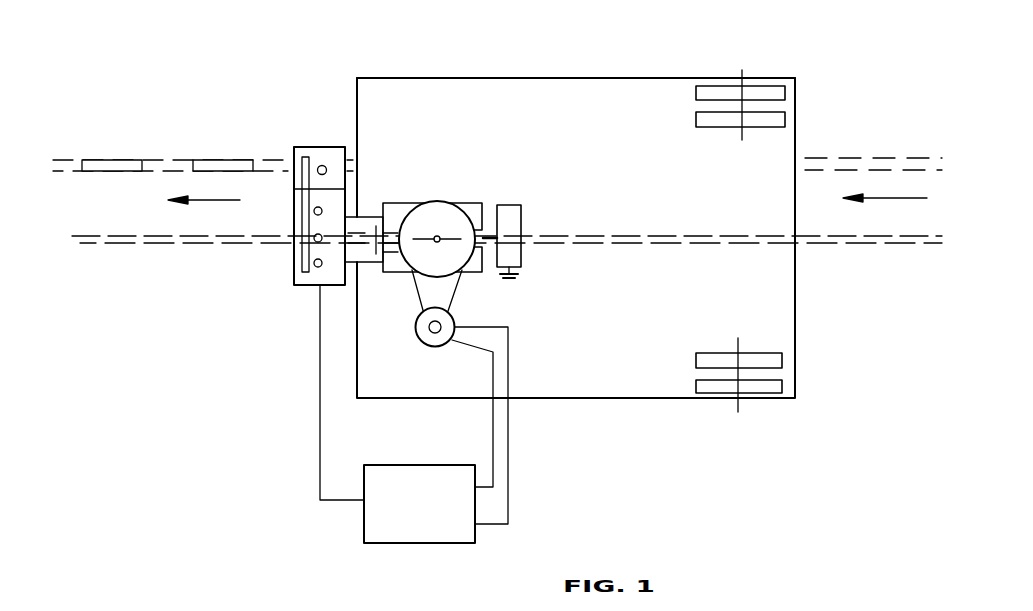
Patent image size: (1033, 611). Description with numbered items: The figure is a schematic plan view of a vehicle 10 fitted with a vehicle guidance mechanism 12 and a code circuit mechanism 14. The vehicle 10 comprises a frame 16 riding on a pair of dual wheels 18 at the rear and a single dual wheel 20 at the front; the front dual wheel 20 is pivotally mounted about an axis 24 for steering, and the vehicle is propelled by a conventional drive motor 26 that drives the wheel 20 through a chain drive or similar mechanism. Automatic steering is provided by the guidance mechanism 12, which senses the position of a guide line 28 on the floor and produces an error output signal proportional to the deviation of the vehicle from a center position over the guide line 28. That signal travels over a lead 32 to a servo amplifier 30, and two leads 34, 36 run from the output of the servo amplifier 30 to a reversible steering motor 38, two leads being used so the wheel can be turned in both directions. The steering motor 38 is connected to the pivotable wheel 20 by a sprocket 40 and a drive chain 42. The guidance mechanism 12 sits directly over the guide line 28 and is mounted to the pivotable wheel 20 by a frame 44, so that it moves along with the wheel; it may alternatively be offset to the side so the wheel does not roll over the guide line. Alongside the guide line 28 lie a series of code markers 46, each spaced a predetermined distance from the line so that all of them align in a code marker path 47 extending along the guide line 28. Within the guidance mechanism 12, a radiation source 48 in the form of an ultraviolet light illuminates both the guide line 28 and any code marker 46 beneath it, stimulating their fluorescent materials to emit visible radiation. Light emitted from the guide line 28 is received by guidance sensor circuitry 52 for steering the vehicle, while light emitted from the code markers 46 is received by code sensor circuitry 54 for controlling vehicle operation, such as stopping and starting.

The vehicle 10 is at (565, 52).
The vehicle guidance mechanism 12 is at (275, 287).
The code circuit mechanism 14 is at (290, 118).
The frame 16 is at (628, 82).
The dual wheels 18 is at (764, 90).
The dual wheel 20 is at (486, 203).
The axis 24 is at (439, 236).
The drive motor 26 is at (521, 210).
The guide line 28 is at (183, 243).
The servo amplifier 30 is at (412, 545).
The lead 32 is at (320, 410).
The lead 34 is at (493, 430).
The lead 36 is at (510, 449).
The reversible steering motor 38 is at (452, 318).
The sprocket 40 is at (425, 210).
The drive chain 42 is at (413, 298).
The frame 44 is at (366, 227).
The code markers 46 is at (113, 166).
The code marker path 47 is at (155, 160).
The radiation source 48 is at (303, 253).
The guidance sensor circuitry 52 is at (311, 285).
The code sensor circuitry 54 is at (328, 145).